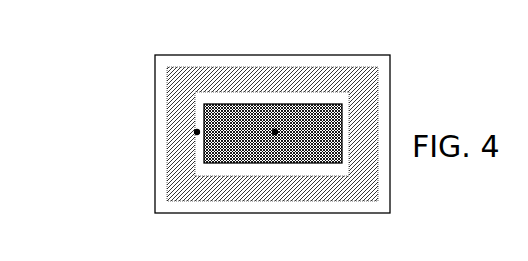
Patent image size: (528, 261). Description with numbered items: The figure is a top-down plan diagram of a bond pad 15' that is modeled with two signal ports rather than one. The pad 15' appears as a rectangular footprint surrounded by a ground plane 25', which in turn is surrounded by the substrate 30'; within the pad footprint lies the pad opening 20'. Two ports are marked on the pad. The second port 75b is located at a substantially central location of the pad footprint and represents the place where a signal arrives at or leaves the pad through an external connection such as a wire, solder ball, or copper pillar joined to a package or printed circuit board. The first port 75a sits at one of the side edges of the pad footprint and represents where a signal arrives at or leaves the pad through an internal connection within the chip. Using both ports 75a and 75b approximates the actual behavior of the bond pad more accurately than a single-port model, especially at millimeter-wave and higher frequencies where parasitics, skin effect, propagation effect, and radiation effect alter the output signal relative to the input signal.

The substrate 30' is at (259, 119).
The ground plane 25' is at (272, 113).
The pad 15' is at (285, 100).
The pad opening 20' is at (273, 94).
The first port 75a is at (197, 132).
The second port 75b is at (275, 132).